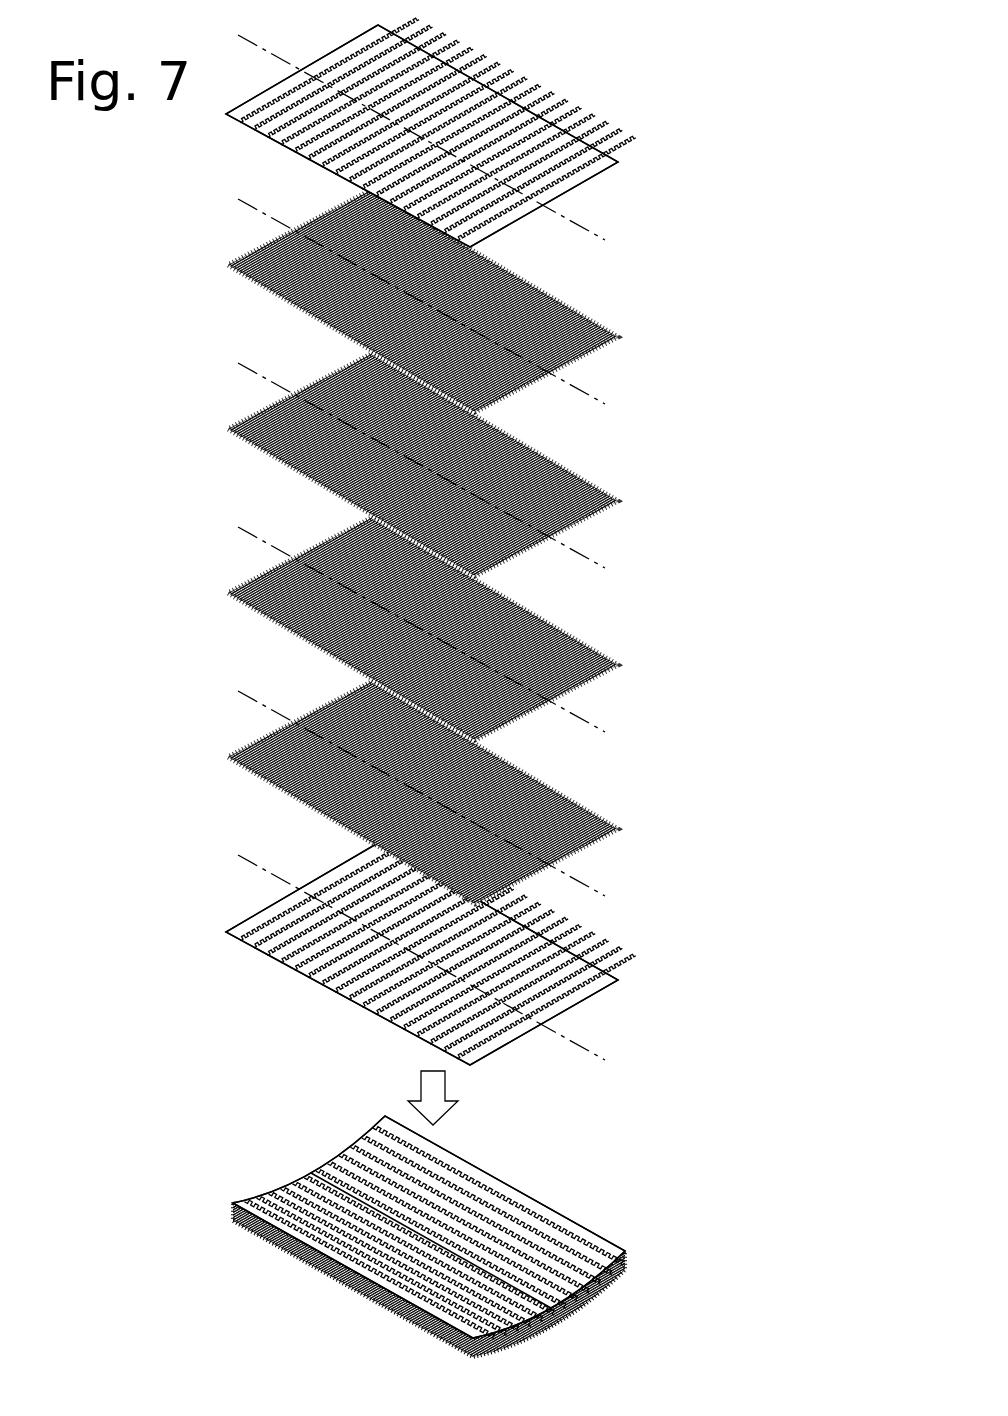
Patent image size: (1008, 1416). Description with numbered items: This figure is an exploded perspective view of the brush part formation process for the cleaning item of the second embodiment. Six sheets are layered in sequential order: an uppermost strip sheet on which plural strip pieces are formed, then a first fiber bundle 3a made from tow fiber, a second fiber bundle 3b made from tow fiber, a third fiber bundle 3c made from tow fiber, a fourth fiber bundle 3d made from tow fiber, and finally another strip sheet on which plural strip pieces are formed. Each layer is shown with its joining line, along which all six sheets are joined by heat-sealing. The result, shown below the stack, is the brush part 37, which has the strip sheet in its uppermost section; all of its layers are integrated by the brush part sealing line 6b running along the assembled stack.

The first fiber bundle 3a is at (261, 292).
The second fiber bundle 3b is at (261, 456).
The third fiber bundle 3c is at (261, 620).
The fourth fiber bundle 3d is at (261, 784).
The brush part 37 is at (262, 1271).
The brush part sealing line 6b is at (542, 1285).